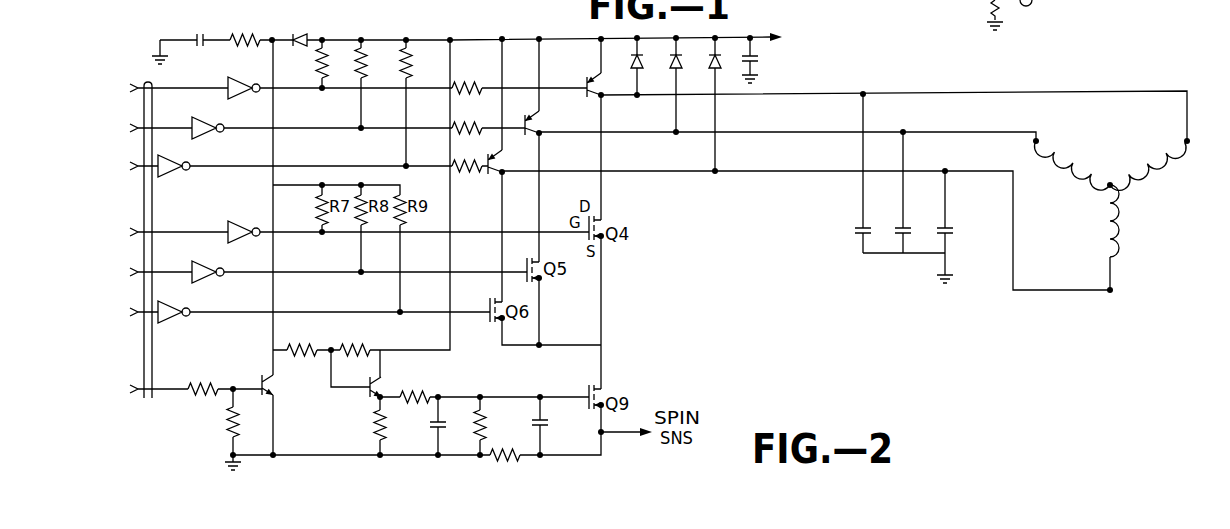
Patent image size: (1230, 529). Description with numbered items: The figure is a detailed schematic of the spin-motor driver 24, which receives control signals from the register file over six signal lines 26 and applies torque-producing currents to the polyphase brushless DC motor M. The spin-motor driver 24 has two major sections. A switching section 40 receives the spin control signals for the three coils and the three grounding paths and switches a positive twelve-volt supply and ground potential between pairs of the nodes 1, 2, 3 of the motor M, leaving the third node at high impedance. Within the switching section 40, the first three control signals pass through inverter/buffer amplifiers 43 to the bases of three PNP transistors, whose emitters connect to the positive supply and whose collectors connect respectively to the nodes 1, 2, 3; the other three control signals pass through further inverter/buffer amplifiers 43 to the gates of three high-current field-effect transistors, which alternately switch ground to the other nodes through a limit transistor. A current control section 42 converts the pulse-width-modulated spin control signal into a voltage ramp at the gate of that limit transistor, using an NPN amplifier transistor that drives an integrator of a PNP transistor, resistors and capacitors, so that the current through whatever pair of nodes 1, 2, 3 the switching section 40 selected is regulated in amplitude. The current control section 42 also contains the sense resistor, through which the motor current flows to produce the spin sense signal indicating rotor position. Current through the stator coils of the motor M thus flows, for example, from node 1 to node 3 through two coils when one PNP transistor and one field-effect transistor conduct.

The spin-motor driver 24 is at (125, 31).
The signal lines 26 is at (148, 398).
The switching section 40 is at (479, 34).
The current control section 42 is at (376, 457).
The inverter/buffer amplifiers 43 is at (238, 78).
The motor M is at (1106, 81).
The node 1 is at (1186, 140).
The node 2 is at (1037, 140).
The node 3 is at (1112, 292).